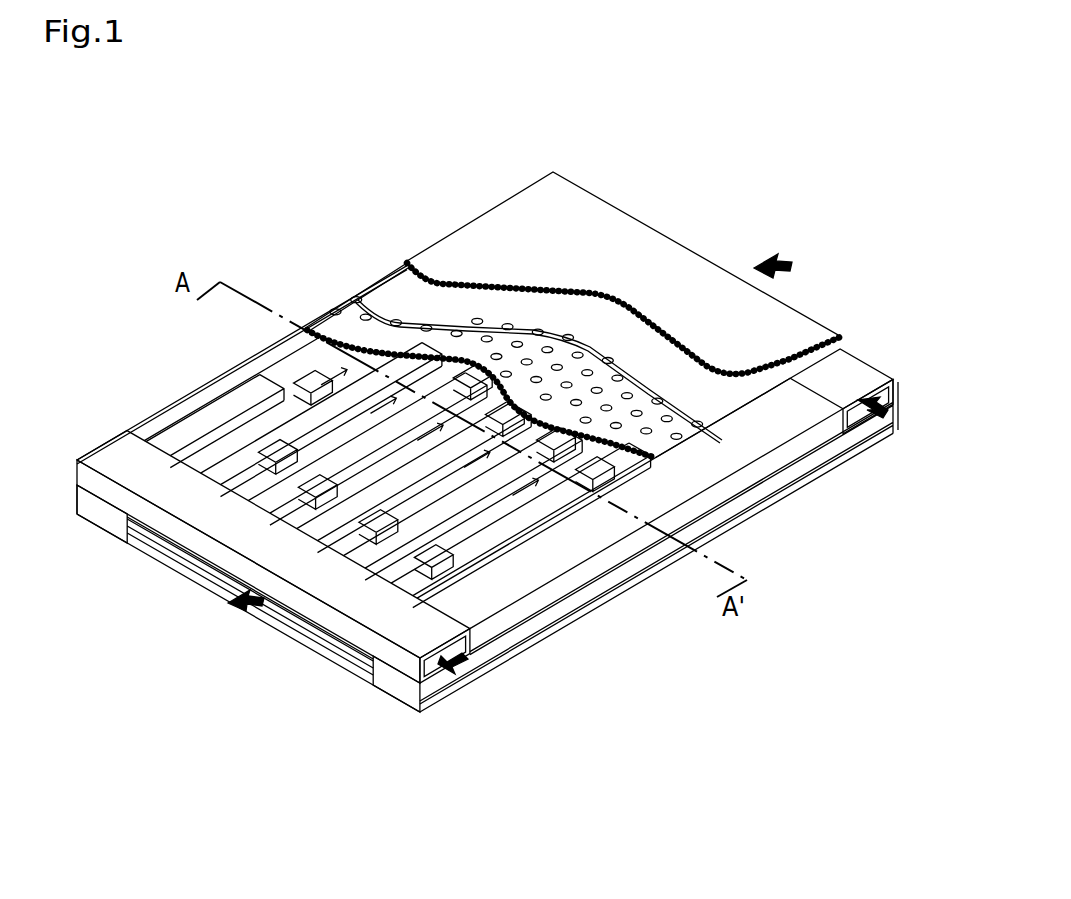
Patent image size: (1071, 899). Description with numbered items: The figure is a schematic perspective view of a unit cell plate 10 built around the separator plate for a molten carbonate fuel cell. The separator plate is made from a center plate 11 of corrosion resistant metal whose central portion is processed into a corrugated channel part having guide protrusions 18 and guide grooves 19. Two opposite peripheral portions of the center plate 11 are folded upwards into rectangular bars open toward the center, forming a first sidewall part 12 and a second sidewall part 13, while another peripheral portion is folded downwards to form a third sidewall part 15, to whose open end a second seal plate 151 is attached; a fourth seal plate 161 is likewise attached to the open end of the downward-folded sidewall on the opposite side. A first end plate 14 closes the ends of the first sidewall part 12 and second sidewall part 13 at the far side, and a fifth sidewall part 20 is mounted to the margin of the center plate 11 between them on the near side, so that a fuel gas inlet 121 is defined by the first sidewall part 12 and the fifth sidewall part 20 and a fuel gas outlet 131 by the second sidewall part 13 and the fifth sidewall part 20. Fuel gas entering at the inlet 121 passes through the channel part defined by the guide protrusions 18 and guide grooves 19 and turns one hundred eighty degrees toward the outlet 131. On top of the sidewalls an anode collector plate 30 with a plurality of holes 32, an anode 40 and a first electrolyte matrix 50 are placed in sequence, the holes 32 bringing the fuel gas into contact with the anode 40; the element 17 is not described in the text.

The unit cell plate 10 is at (748, 147).
The center plate 11 is at (270, 405).
The first sidewall part 12 is at (118, 442).
The fuel gas inlet 121 is at (437, 662).
The second sidewall part 13 is at (855, 346).
The fuel gas outlet 131 is at (858, 430).
The first end plate 14 is at (205, 388).
The third sidewall part 15 is at (601, 590).
The second seal plate 151 is at (405, 698).
The fourth seal plate 161 is at (113, 520).
The side groove 17 is at (290, 634).
The guide protrusions 18 is at (183, 440).
The guide grooves 19 is at (690, 496).
The fifth sidewall part 20 is at (517, 584).
The anode collector plate 30 is at (357, 305).
The holes 32 is at (340, 318).
The anode 40 is at (395, 278).
The first electrolyte matrix 50 is at (533, 196).